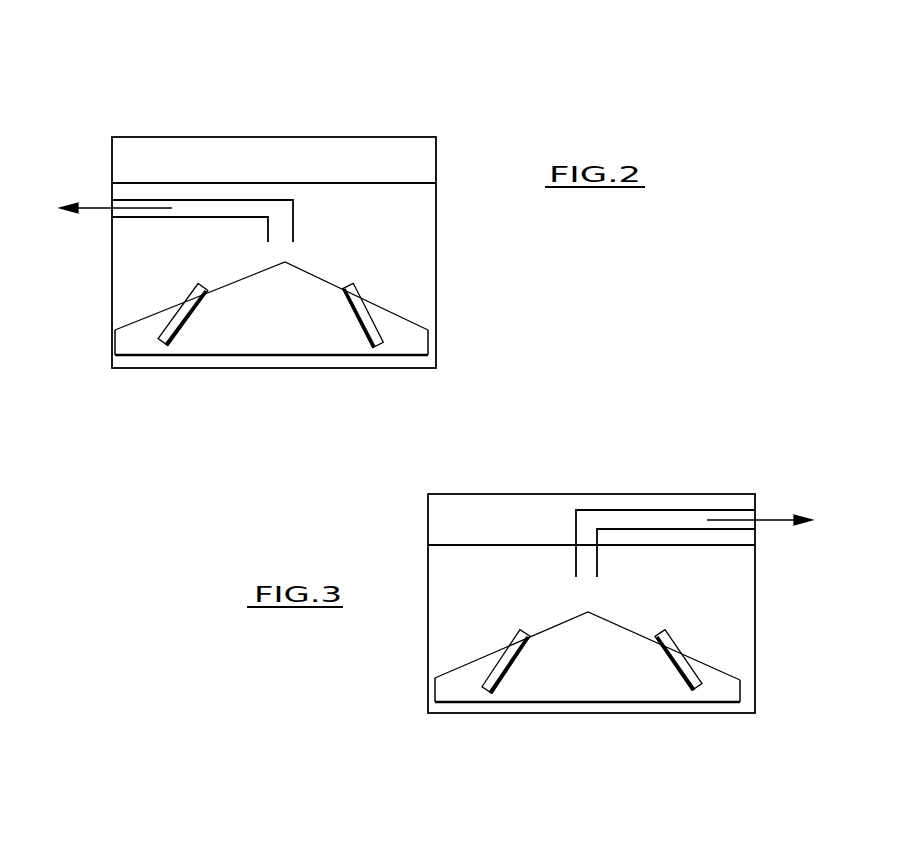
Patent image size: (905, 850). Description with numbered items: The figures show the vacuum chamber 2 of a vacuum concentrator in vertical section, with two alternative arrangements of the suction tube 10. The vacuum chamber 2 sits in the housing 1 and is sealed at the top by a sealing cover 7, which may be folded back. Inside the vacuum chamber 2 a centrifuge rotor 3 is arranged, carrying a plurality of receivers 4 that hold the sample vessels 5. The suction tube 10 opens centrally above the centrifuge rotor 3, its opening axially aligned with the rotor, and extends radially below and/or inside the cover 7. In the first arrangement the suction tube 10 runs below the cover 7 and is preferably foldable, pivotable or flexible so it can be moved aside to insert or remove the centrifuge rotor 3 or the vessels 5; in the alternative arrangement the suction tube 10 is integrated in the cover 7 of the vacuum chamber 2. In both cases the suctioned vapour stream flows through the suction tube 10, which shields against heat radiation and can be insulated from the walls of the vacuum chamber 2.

In FIG. 2, the housing 1 is at (98, 381).
In FIG. 3, the housing 1 is at (772, 607).
In FIG. 2, the vacuum chamber 2 is at (436, 225).
In FIG. 3, the vacuum chamber 2 is at (425, 647).
In FIG. 2, the centrifuge rotor 3 is at (250, 335).
In FIG. 3, the centrifuge rotor 3 is at (572, 668).
In FIG. 2, the receivers 4 is at (193, 305).
In FIG. 3, the receivers 4 is at (510, 660).
In FIG. 2, the sample vessels 5 is at (357, 295).
In FIG. 3, the sample vessels 5 is at (670, 642).
In FIG. 2, the sealing cover 7 is at (335, 162).
In FIG. 3, the sealing cover 7 is at (492, 518).
In FIG. 2, the suction tube 10 is at (192, 200).
In FIG. 3, the suction tube 10 is at (630, 517).